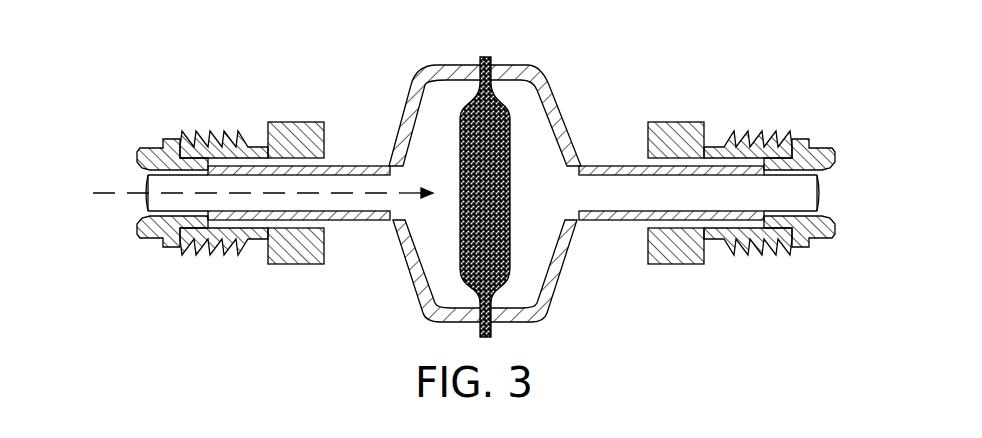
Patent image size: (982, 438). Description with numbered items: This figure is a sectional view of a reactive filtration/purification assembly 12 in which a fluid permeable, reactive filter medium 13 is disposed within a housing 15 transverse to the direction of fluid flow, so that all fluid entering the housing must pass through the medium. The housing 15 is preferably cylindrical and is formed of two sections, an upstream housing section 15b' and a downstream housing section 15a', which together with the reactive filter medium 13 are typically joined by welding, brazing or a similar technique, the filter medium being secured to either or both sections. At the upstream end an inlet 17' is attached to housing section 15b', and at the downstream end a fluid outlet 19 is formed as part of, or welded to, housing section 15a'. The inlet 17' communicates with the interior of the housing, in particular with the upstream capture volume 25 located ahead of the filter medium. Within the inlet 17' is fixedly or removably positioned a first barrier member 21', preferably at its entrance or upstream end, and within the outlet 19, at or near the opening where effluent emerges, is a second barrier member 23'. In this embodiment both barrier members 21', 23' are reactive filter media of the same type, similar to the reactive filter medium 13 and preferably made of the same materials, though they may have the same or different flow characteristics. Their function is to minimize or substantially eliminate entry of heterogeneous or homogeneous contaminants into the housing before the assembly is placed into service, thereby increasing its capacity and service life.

The filter assembly 12 is at (626, 72).
The reactive filter medium 13 is at (508, 220).
The housing 15 is at (486, 176).
The downstream housing section 15a' is at (542, 177).
The housing section 15b' is at (437, 171).
The inlet 17' is at (230, 211).
The fluid outlet 19 is at (611, 221).
The barrier member 21' is at (226, 181).
The barrier member 23' is at (769, 193).
The upstream capture volume 25 is at (449, 242).